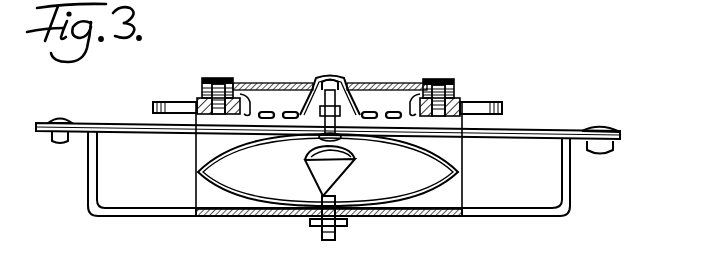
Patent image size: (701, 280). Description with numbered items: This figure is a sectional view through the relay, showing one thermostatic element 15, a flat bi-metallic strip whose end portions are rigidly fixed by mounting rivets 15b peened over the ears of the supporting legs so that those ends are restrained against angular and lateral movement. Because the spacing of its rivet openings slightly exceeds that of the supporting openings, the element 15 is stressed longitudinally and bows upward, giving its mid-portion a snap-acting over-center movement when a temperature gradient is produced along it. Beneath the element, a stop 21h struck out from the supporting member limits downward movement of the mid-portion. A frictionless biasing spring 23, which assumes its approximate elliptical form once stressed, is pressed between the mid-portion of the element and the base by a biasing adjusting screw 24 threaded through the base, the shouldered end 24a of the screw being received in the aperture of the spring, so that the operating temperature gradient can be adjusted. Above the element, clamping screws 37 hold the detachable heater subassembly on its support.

The thermostatic element 15 is at (508, 130).
The mounting rivets 15b is at (58, 120).
The biasing spring 23 is at (456, 172).
The stop 21h is at (312, 158).
The shouldered end of adjusting screw 24a is at (343, 186).
The biasing adjusting screw 24 is at (320, 234).
The clamping screws 37 is at (214, 77).